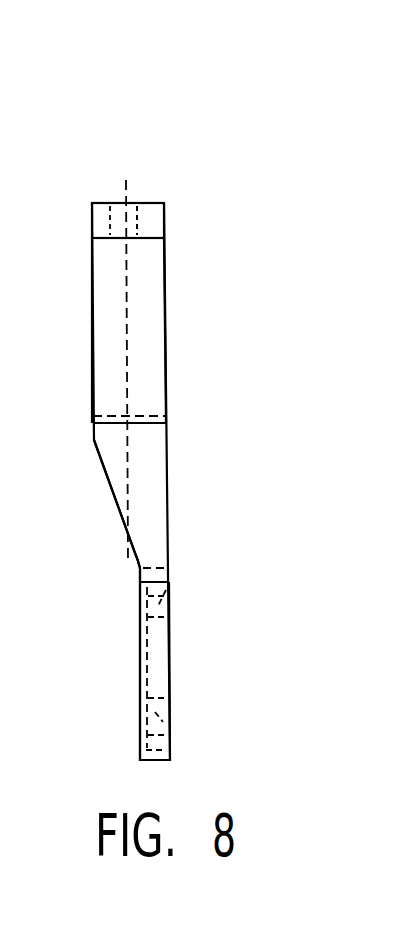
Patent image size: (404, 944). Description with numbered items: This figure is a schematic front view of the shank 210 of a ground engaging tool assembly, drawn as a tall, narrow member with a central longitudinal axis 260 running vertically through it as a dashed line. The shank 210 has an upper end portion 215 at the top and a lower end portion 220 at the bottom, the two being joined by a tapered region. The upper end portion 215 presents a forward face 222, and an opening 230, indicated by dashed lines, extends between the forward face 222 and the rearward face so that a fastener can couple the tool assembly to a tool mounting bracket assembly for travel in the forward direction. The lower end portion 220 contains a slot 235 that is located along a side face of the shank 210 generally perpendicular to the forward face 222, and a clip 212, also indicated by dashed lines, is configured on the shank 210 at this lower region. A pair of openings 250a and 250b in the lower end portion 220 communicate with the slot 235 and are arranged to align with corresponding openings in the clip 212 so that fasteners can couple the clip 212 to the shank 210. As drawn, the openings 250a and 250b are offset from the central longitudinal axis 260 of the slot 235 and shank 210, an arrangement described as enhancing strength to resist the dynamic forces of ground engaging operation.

The shank 210 is at (202, 315).
The clip 212 is at (138, 560).
The upper end portion 215 is at (204, 188).
The lower end portion 220 is at (42, 634).
The forward face 222 is at (143, 278).
The opening 230 is at (155, 205).
The slot 235 is at (143, 637).
The opening 250a is at (182, 568).
The opening 250b is at (192, 732).
The central longitudinal axis 260 is at (127, 172).